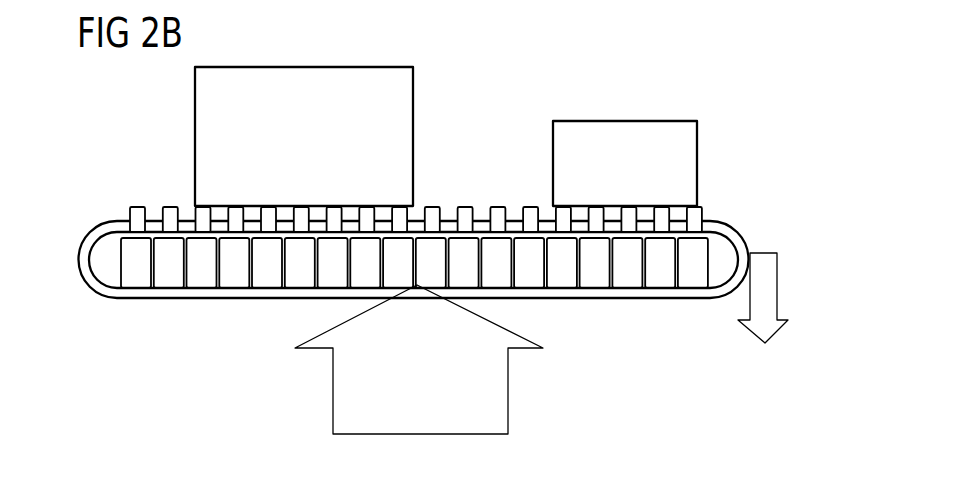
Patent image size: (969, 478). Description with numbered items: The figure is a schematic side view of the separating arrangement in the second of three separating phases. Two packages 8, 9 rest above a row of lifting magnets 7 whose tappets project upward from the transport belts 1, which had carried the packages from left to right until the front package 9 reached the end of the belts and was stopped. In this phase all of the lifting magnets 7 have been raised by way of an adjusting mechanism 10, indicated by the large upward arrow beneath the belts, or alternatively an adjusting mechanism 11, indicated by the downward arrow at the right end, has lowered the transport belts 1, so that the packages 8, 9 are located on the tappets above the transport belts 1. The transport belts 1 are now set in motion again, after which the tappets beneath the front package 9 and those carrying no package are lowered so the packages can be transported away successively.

The transport belts 1 is at (665, 298).
The lifting magnets 7 is at (593, 263).
The package 8 is at (234, 120).
The front package 9 is at (643, 147).
The adjusting mechanism 10 is at (419, 359).
The adjusting mechanism 11 is at (763, 273).